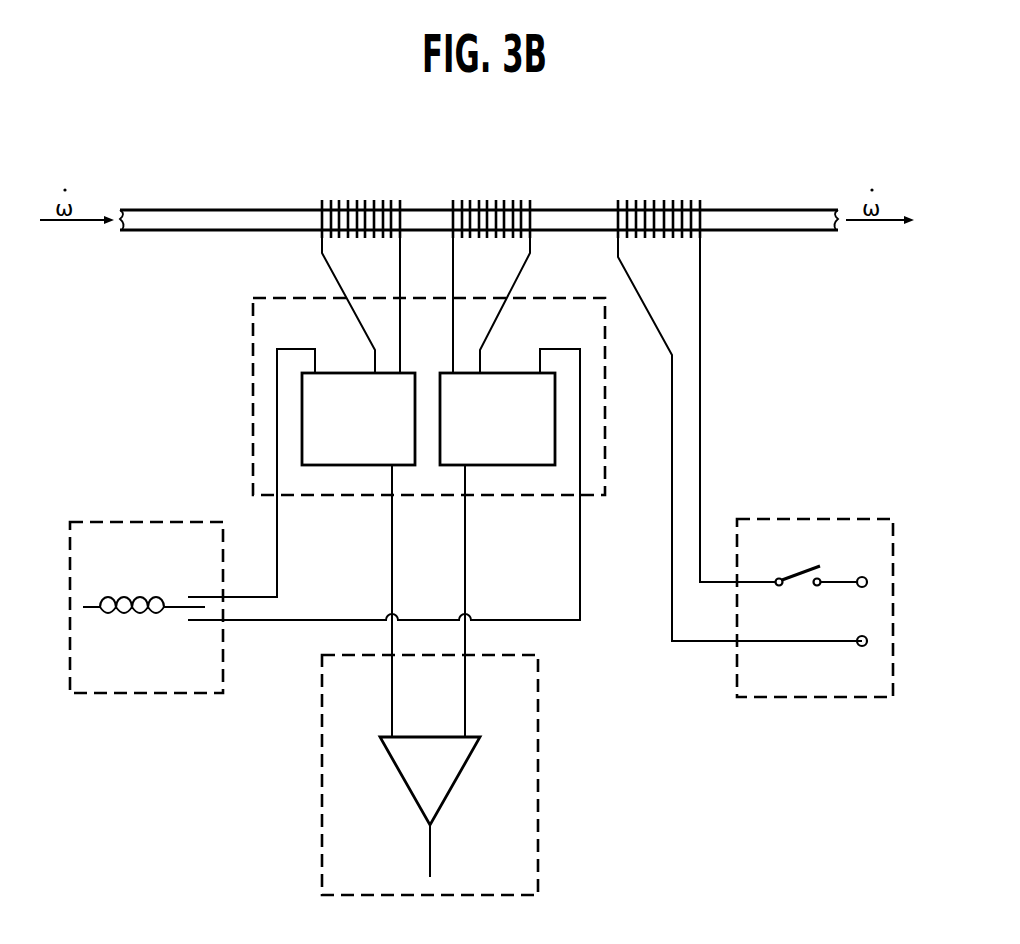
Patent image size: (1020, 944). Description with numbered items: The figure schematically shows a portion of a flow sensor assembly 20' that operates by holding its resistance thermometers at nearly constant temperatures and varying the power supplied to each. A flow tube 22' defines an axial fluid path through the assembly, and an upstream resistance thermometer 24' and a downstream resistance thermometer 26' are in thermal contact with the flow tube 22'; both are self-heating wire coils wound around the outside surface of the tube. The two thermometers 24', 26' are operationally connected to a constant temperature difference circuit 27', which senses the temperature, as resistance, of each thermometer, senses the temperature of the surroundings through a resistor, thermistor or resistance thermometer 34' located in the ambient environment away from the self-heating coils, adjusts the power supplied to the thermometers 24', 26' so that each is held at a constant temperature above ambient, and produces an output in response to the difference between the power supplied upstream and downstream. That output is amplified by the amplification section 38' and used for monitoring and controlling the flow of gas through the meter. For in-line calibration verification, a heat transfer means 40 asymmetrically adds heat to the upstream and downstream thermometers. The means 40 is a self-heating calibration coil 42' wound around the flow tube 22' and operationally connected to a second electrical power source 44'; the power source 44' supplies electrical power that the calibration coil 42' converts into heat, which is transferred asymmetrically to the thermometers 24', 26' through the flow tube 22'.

The flow sensor assembly 20' is at (491, 369).
The flow tube 22' is at (479, 200).
The upstream resistance thermometer 24' is at (376, 260).
The downstream resistance thermometer 26' is at (506, 262).
The constant temperature difference circuit 27' is at (375, 517).
The ambient resistance thermometer 34' is at (146, 635).
The amplification section 38' is at (470, 775).
The heat transfer means 40 is at (823, 493).
The self-heating calibration coil 42' is at (740, 398).
The second electrical power source 44' is at (816, 659).